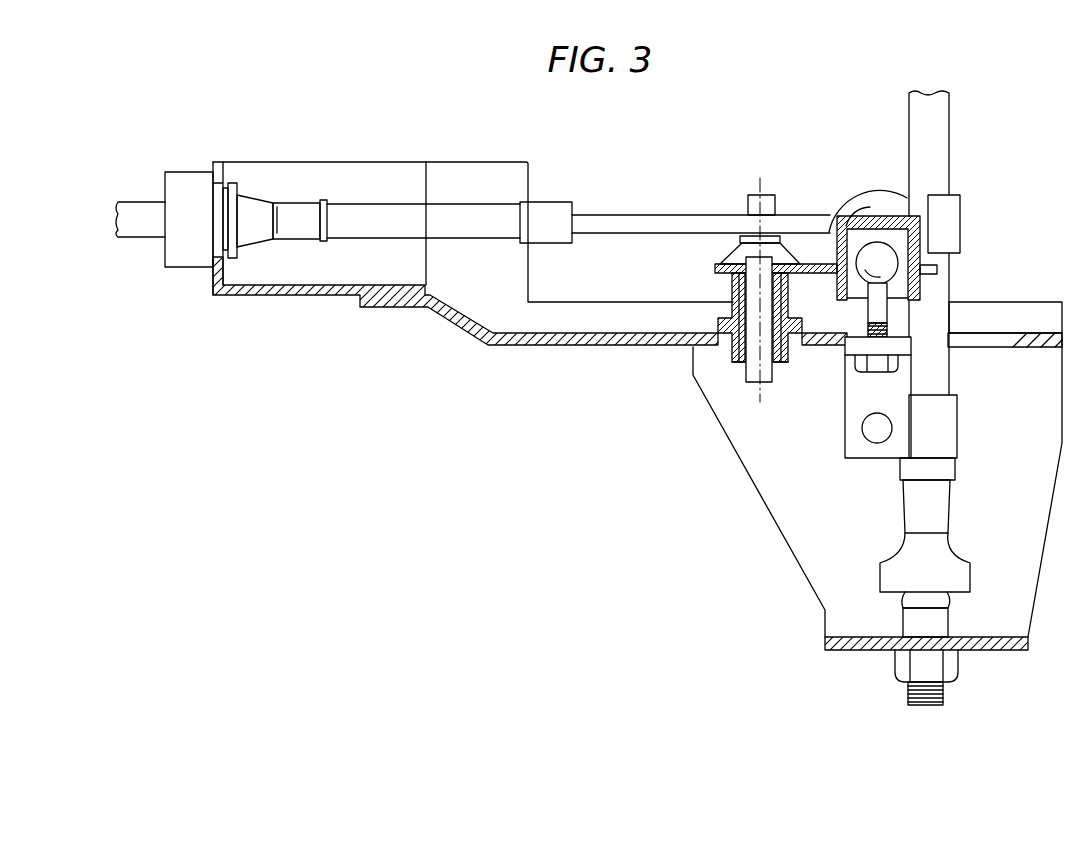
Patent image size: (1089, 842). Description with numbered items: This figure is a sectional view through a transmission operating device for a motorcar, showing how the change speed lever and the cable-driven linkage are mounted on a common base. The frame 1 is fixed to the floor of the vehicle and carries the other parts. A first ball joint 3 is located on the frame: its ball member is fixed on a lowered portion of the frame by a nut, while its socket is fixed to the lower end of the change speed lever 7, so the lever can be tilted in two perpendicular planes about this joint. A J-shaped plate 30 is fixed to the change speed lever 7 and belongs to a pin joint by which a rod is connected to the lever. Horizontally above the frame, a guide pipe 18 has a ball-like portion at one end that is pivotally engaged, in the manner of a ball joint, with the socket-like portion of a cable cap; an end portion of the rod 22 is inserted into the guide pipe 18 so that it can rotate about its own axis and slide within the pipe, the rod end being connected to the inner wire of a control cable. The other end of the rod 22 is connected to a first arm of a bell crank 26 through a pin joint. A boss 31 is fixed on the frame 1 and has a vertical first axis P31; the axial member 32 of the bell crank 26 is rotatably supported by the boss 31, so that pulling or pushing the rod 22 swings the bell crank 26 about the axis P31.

The frame 1 is at (552, 338).
The first ball joint 3 is at (872, 560).
The change speed lever 7 is at (938, 152).
The guide pipe 18 is at (468, 217).
The rod 22 is at (622, 222).
The bell crank 26 is at (810, 270).
The J-shaped plate 30 is at (948, 217).
The boss 31 is at (733, 305).
The axial member 32 is at (743, 372).
The axis of boss P31 is at (757, 382).